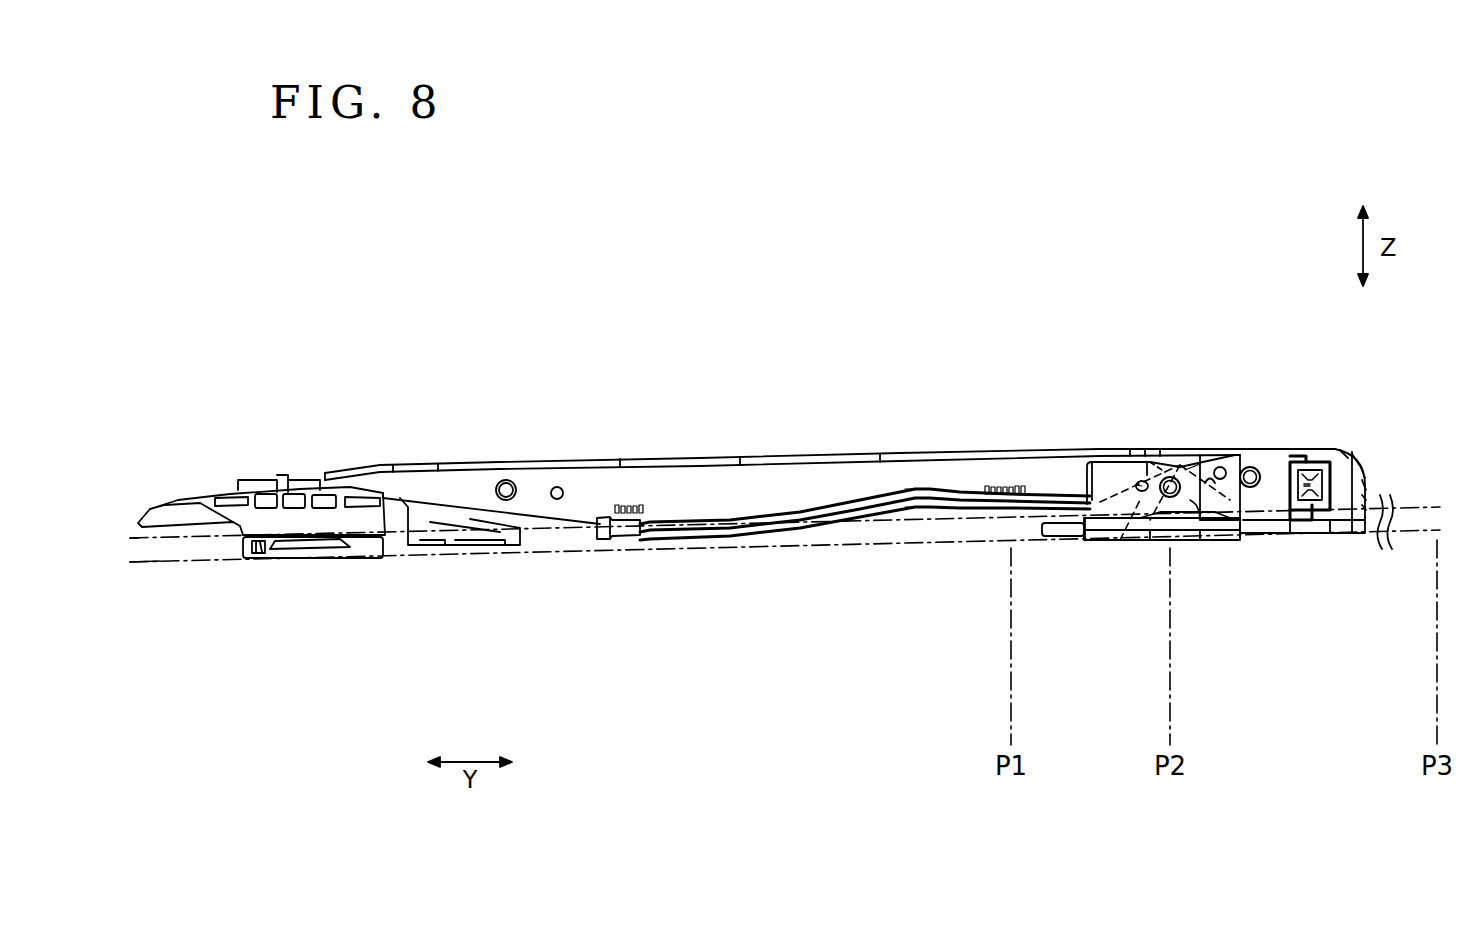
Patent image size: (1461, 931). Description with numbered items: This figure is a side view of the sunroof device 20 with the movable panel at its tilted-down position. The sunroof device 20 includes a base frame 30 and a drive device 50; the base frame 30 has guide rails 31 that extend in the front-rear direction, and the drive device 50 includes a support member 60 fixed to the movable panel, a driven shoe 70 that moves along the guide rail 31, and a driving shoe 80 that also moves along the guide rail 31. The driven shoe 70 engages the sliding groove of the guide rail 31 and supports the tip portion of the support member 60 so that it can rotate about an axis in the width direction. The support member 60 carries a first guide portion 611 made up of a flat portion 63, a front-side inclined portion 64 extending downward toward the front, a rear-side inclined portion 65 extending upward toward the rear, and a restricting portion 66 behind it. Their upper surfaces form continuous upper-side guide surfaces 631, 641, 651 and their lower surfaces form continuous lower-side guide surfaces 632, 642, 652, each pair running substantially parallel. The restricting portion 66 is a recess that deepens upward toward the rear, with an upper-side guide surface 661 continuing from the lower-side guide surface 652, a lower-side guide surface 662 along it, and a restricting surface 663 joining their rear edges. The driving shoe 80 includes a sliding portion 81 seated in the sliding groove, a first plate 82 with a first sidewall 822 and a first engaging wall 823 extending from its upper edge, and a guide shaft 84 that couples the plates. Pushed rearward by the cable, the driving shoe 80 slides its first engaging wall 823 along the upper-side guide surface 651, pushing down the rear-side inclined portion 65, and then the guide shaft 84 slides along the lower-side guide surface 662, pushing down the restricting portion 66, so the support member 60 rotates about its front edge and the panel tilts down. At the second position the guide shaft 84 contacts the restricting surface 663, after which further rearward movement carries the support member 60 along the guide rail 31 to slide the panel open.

The sunroof device 20 is at (755, 468).
The base frame 30 is at (146, 562).
The guide rail 31 is at (131, 535).
The drive device 50 is at (258, 336).
The support member 60 is at (430, 457).
The driven shoe 70 is at (199, 493).
The first guide portion 611 is at (660, 521).
The flat portion 63 is at (935, 500).
The upper-side guide surface 631 is at (932, 497).
The lower-side guide surface 632 is at (946, 512).
The front-side inclined portion 64 is at (843, 513).
The upper-side guide surface 641 is at (723, 520).
The lower-side guide surface 642 is at (760, 542).
The rear-side inclined portion 65 is at (1125, 520).
The upper-side guide surface 651 is at (1065, 497).
The lower-side guide surface 652 is at (1110, 530).
The restricting portion 66 is at (1185, 490).
The upper-side guide surface 661 is at (1135, 485).
The lower-side guide surface 662 is at (1165, 530).
The restricting surface 663 is at (1195, 462).
The driving shoe 80 is at (1081, 539).
The sliding portion 81 is at (1124, 545).
The first plate 82 is at (1233, 442).
The first sidewall 822 is at (1253, 466).
The first engaging wall 823 is at (1166, 476).
The guide shaft 84 is at (1200, 520).